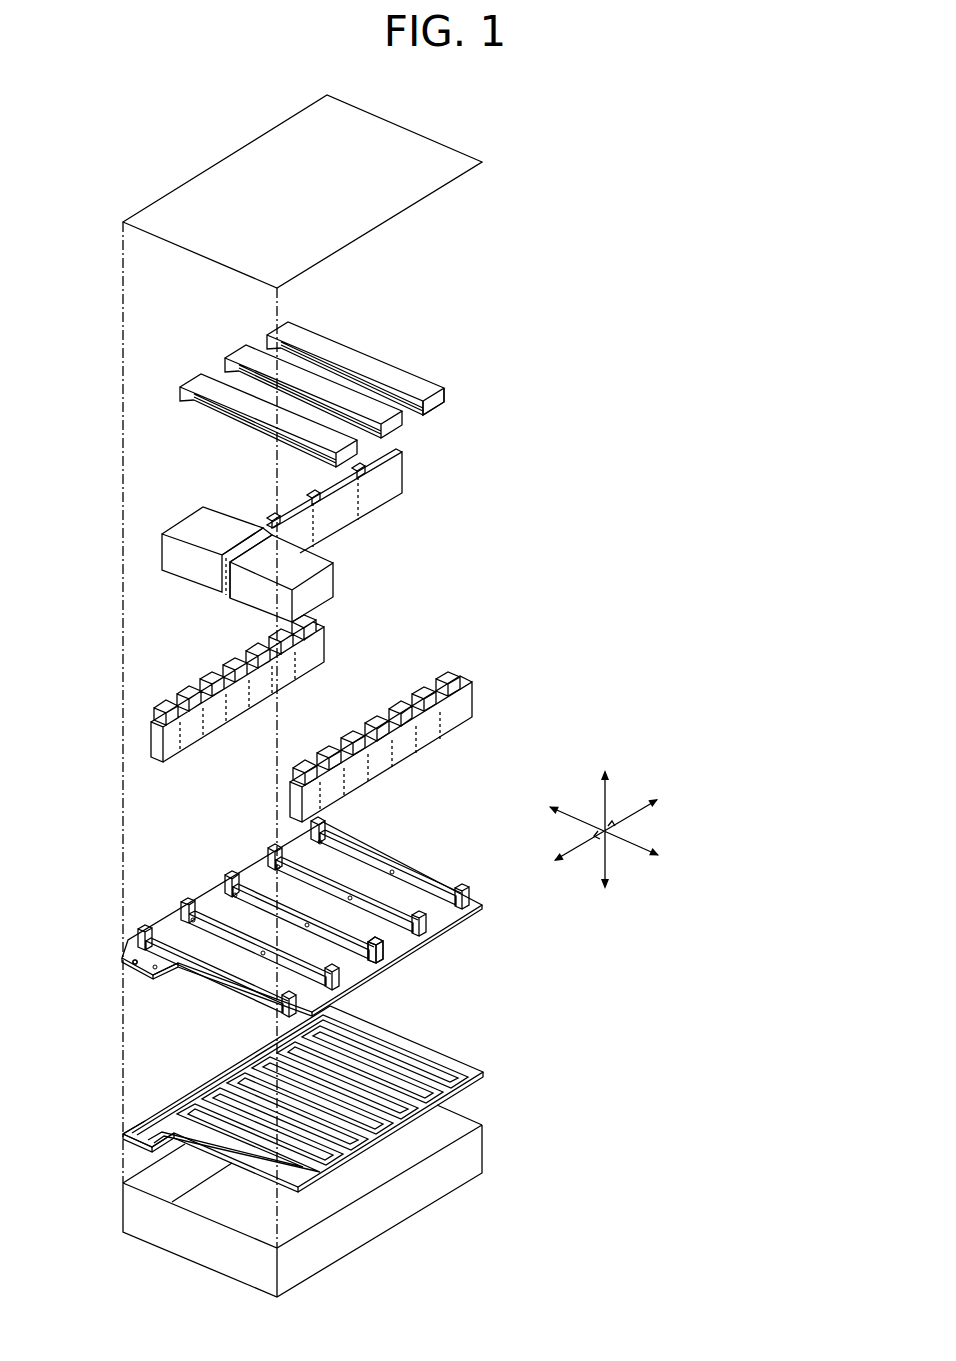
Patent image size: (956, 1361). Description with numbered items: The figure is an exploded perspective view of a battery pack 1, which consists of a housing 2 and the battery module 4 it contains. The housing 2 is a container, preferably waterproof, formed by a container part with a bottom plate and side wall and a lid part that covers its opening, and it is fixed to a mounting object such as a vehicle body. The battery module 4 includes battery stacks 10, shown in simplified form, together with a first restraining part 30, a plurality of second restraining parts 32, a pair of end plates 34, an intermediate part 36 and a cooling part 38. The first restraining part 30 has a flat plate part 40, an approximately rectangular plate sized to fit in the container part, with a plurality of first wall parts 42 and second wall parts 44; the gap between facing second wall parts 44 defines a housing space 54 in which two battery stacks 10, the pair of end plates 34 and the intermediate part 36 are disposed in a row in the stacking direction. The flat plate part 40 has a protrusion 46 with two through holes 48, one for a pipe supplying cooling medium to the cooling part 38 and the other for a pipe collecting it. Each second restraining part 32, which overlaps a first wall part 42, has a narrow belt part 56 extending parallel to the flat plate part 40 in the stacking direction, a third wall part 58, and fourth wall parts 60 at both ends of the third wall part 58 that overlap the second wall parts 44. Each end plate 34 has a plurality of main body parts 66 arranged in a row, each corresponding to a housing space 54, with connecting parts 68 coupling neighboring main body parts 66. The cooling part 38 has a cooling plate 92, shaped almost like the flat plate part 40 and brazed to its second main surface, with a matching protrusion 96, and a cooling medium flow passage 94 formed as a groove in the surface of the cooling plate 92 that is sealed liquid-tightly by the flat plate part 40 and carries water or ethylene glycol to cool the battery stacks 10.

The battery pack 1 is at (490, 1307).
The housing 2 is at (433, 141).
The battery module 4 is at (107, 315).
The battery stack 10 is at (190, 583).
The first restraining part 30 is at (458, 875).
The second restraining part 32 is at (450, 397).
The end plate 34 is at (465, 732).
The intermediate part 36 is at (228, 598).
The cooling part 38 is at (458, 1062).
The flat plate part 40 is at (170, 927).
The first wall part 42 is at (213, 905).
The second wall part 44 is at (228, 880).
The protrusion 46 is at (170, 973).
The through hole 48 is at (133, 967).
The housing space 54 is at (373, 970).
The belt part 56 is at (413, 387).
The third wall part 58 is at (408, 408).
The fourth wall part 60 is at (436, 407).
The main body part 66 is at (413, 750).
The connecting part 68 is at (435, 740).
The cooling plate 92 is at (400, 1043).
The cooling medium flow passage 94 is at (475, 1088).
The protrusion 96 is at (127, 1143).